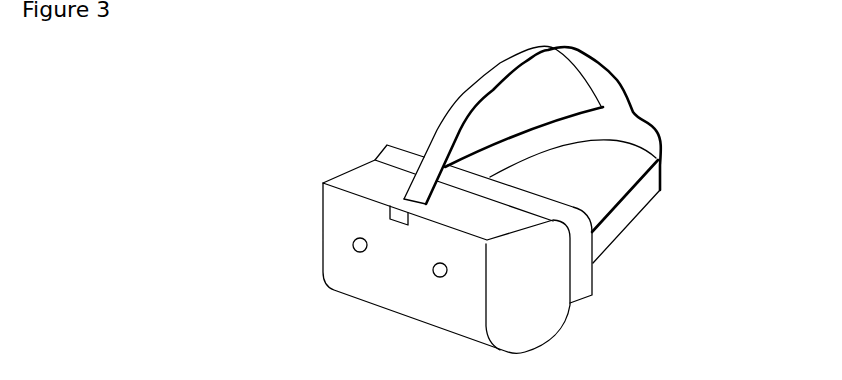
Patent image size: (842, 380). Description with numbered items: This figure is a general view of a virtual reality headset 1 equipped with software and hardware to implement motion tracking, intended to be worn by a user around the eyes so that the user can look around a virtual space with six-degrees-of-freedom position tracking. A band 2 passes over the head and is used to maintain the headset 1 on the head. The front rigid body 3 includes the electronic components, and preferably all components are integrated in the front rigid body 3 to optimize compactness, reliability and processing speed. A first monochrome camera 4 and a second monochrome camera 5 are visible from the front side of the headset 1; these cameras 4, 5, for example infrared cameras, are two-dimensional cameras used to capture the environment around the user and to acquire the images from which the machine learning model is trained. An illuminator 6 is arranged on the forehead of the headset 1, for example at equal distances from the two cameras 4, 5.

The virtual reality headset 1 is at (688, 80).
The band 2 is at (466, 77).
The front rigid body 3 is at (570, 336).
The first monochrome camera 4 is at (435, 276).
The second monochrome camera 5 is at (353, 243).
The illuminator 6 is at (399, 227).